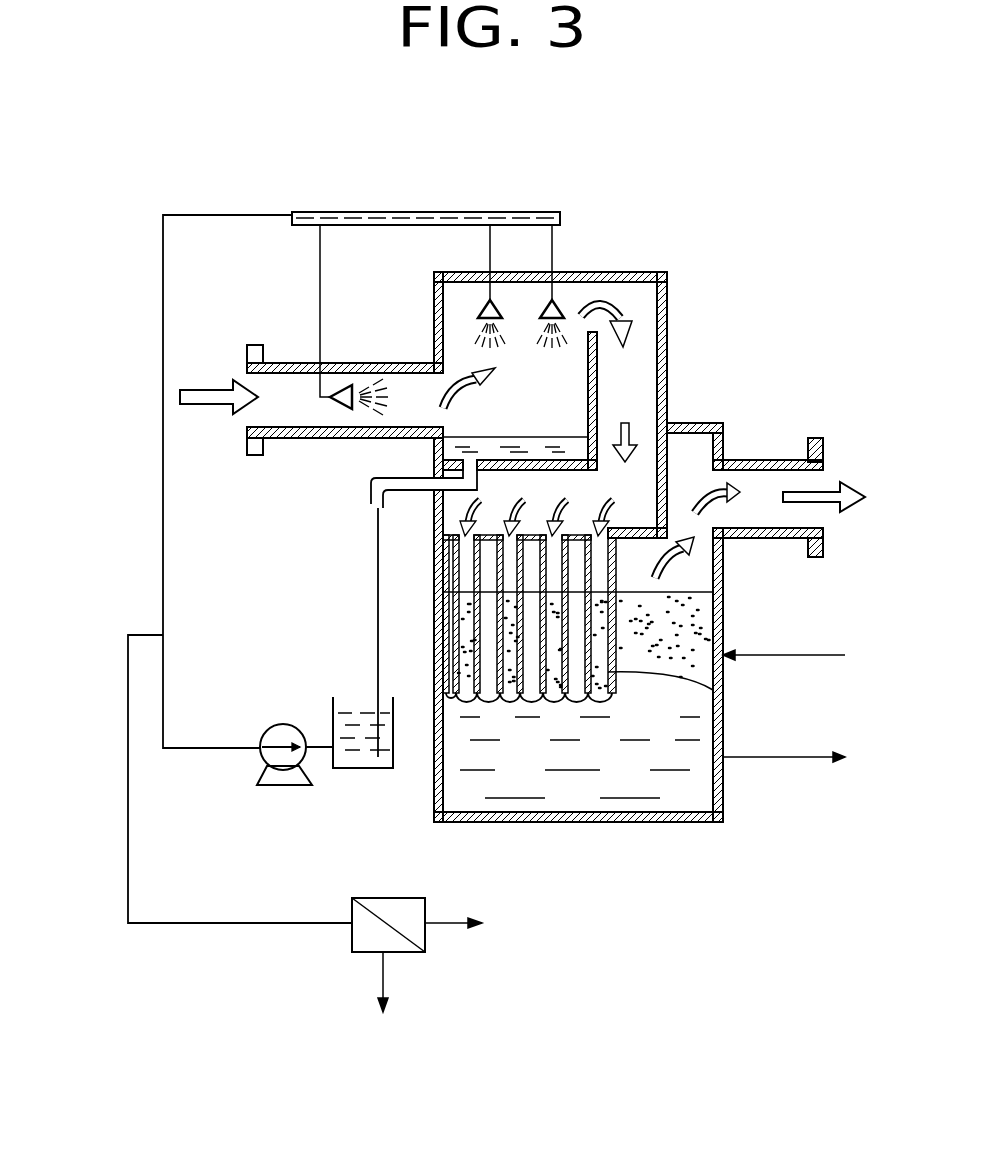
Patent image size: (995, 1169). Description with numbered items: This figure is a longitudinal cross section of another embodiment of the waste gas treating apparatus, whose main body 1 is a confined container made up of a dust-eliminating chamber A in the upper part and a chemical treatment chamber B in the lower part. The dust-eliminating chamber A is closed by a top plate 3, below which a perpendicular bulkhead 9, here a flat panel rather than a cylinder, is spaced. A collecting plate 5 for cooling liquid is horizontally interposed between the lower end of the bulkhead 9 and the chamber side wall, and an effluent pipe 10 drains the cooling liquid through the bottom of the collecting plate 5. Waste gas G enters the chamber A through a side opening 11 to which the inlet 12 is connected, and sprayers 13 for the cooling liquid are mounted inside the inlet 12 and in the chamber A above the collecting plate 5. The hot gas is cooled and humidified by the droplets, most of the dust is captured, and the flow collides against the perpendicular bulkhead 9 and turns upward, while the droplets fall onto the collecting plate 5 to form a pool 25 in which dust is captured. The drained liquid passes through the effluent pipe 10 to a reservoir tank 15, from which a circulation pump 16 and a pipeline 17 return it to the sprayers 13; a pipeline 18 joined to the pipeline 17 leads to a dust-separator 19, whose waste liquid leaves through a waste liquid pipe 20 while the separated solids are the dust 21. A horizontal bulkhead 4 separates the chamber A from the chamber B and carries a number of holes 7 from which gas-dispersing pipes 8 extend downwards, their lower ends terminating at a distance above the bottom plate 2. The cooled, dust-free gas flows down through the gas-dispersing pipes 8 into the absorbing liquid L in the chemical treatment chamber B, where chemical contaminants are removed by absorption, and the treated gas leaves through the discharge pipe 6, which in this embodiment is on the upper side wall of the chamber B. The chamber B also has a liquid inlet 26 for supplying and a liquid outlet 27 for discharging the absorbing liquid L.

The main body 1 is at (667, 280).
The bottom plate 2 is at (557, 822).
The top plate 3 is at (587, 272).
The horizontal bulkhead 4 is at (488, 534).
The collecting plate 5 is at (487, 438).
The discharge pipe 6 is at (765, 462).
The holes 7 is at (610, 528).
The gas-dispersing pipes 8 is at (713, 690).
The perpendicular bulkhead 9 is at (598, 353).
The effluent pipe 10 is at (373, 488).
The side opening 11 is at (417, 390).
The inlet 12 is at (352, 363).
The sprayers 13 is at (482, 312).
The reservoir tank 15 is at (330, 708).
The circulation pump 16 is at (280, 788).
The pipeline 17 is at (165, 545).
The pipeline 18 is at (200, 927).
The dust-separator 19 is at (352, 952).
The waste liquid pipe 20 is at (450, 927).
The separated dust 21 is at (387, 983).
The pool 25 is at (560, 443).
The liquid inlet 26 is at (793, 657).
The liquid outlet 27 is at (780, 760).
The dust-eliminating chamber A is at (620, 372).
The chemical treatment chamber B is at (680, 617).
The gas flow G is at (195, 403).
The absorbing liquid L is at (643, 783).